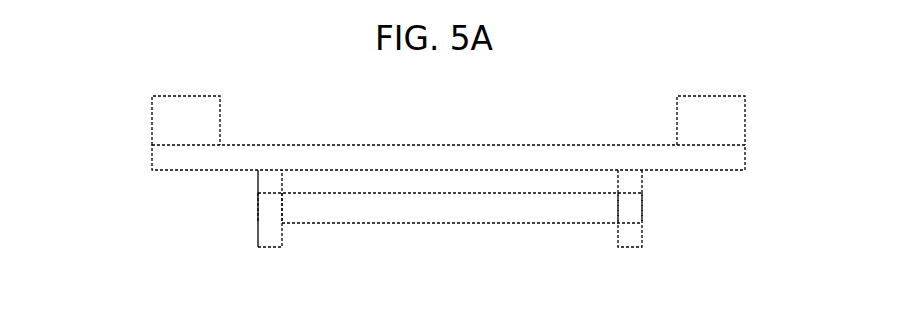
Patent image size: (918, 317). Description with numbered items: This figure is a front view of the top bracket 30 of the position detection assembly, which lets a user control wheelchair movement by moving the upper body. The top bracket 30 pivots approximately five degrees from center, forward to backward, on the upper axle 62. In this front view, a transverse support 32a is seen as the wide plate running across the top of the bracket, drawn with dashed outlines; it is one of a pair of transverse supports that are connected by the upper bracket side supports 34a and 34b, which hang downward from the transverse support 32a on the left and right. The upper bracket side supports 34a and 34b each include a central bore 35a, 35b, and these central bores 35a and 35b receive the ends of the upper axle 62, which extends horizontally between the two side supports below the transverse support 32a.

The top bracket 30 is at (78, 170).
The transverse support 32a is at (745, 166).
The upper bracket side support 34a is at (267, 247).
The upper bracket side support 34b is at (630, 247).
The central bore 35a is at (272, 212).
The central bore 35b is at (631, 211).
The upper axle 62 is at (462, 223).